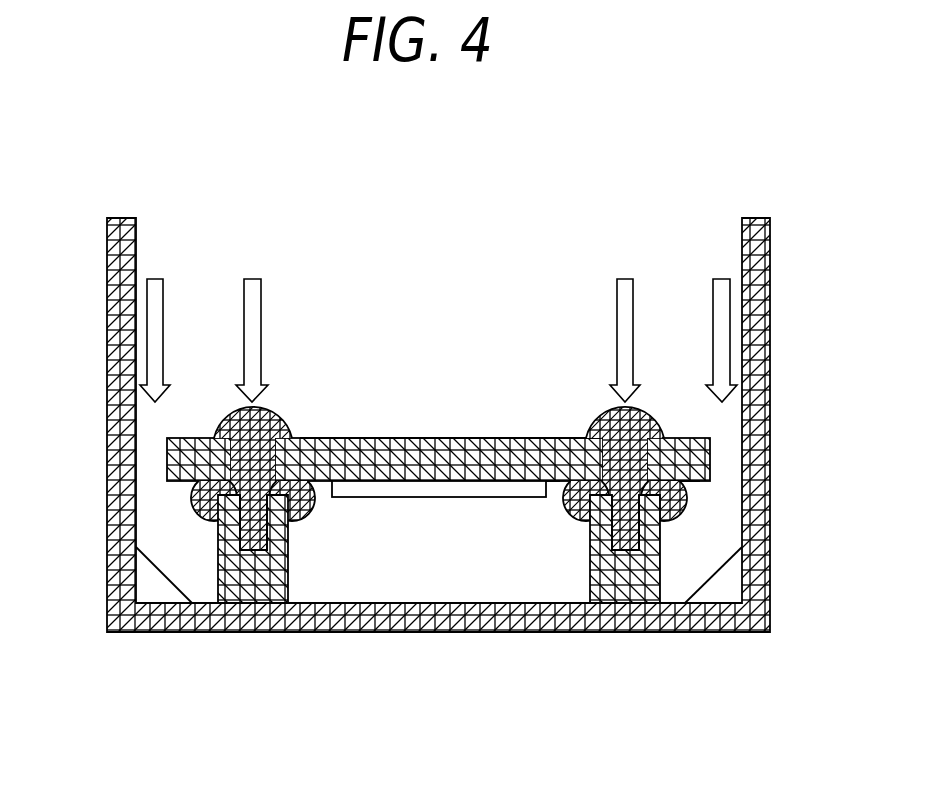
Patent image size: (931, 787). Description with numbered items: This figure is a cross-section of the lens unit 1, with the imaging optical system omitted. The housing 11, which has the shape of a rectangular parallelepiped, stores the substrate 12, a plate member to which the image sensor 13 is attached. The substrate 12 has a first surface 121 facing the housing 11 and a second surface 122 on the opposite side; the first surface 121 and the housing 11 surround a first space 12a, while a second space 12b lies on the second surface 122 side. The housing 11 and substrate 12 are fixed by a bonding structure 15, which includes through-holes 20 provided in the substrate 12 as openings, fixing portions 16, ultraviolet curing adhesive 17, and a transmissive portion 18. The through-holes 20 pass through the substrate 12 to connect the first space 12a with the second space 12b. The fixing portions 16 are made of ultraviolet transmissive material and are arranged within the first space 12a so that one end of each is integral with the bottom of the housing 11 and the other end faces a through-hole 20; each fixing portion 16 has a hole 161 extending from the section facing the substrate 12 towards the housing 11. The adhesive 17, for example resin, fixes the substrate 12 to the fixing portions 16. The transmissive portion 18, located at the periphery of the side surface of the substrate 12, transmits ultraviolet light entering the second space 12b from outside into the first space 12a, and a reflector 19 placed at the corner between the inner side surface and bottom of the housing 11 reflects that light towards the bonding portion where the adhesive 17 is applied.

The lens unit 1 is at (563, 197).
The housing 11 is at (118, 323).
The substrate 12 is at (413, 455).
The first space 12a is at (682, 577).
The second space 12b is at (450, 358).
The first surface 121 is at (482, 482).
The second surface 122 is at (493, 438).
The image sensor 13 is at (422, 497).
The bonding structure 15 is at (502, 439).
The fixing portion 16 is at (227, 567).
The hole 161 is at (262, 537).
The adhesive 17 is at (280, 410).
The transmissive portion 18 is at (153, 462).
The reflector 19 is at (160, 572).
The through-hole 20 is at (255, 458).